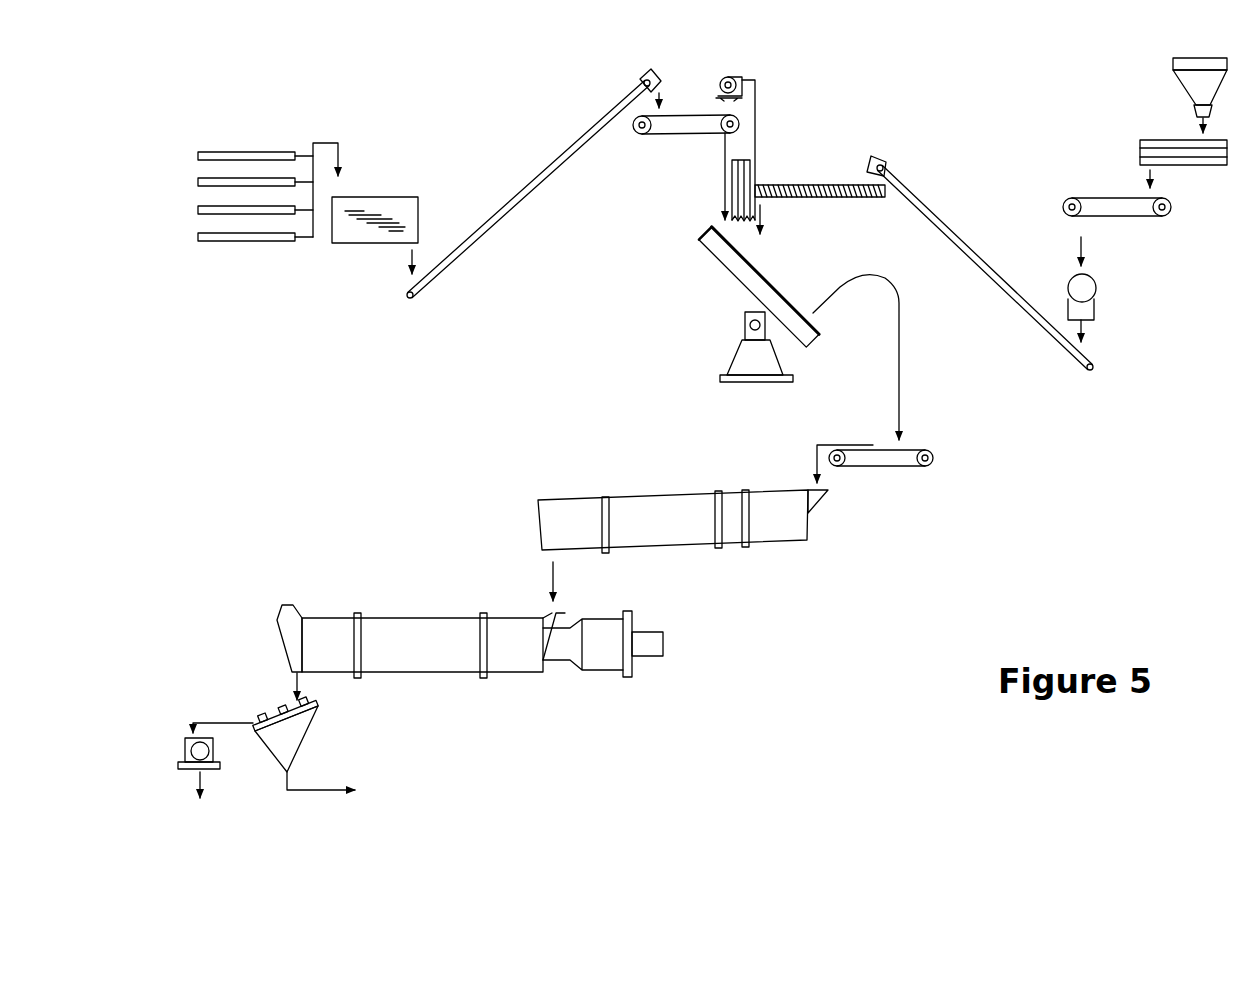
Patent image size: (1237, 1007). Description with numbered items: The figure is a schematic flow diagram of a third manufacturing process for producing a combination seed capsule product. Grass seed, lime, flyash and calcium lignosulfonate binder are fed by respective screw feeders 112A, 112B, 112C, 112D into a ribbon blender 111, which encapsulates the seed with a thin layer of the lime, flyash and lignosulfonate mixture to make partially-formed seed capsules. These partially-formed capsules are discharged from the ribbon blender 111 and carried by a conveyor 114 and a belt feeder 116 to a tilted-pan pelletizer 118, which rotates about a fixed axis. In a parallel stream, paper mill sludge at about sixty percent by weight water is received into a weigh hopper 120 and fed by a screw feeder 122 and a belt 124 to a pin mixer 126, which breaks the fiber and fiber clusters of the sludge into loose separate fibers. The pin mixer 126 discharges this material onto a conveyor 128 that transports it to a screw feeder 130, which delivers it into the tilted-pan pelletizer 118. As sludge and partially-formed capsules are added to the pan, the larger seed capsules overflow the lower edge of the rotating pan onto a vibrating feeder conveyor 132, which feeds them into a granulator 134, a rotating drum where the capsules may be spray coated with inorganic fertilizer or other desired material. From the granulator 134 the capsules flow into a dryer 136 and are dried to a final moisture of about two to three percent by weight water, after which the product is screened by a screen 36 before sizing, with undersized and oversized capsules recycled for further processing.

The screen 36 is at (300, 733).
The ribbon blender 111 is at (418, 210).
The screw feeder 112A is at (224, 151).
The screw feeder 112B is at (270, 178).
The screw feeder 112C is at (224, 211).
The screw feeder 112D is at (273, 239).
The conveyor 114 is at (545, 165).
The belt feeder 116 is at (672, 137).
The tilted-pan pelletizer 118 is at (716, 258).
The weigh hopper 120 is at (1188, 90).
The screw feeder 122 is at (1210, 167).
The belt 124 is at (1082, 196).
The pin mixer 126 is at (1097, 288).
The conveyor 128 is at (957, 236).
The screw feeder 130 is at (817, 184).
The vibrating feeder conveyor 132 is at (913, 469).
The granulator 134 is at (661, 504).
The dryer 136 is at (416, 617).